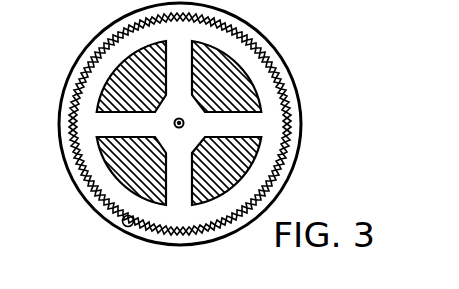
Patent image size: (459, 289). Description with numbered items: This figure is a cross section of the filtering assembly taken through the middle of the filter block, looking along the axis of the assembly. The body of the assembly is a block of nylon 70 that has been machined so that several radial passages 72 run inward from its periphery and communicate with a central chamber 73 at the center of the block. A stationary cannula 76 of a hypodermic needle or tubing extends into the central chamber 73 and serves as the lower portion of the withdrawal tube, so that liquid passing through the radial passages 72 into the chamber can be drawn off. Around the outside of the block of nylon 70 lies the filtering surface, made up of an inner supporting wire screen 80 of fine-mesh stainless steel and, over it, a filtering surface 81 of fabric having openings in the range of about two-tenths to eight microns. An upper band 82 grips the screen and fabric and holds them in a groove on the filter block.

The block of nylon 70 is at (121, 78).
The radial passages 72 is at (255, 162).
The central chamber 73 is at (197, 133).
The cannula 76 is at (184, 119).
The inner supporting wire screen 80 is at (133, 224).
The filtering surface 81 is at (88, 192).
The upper band 82 is at (295, 125).